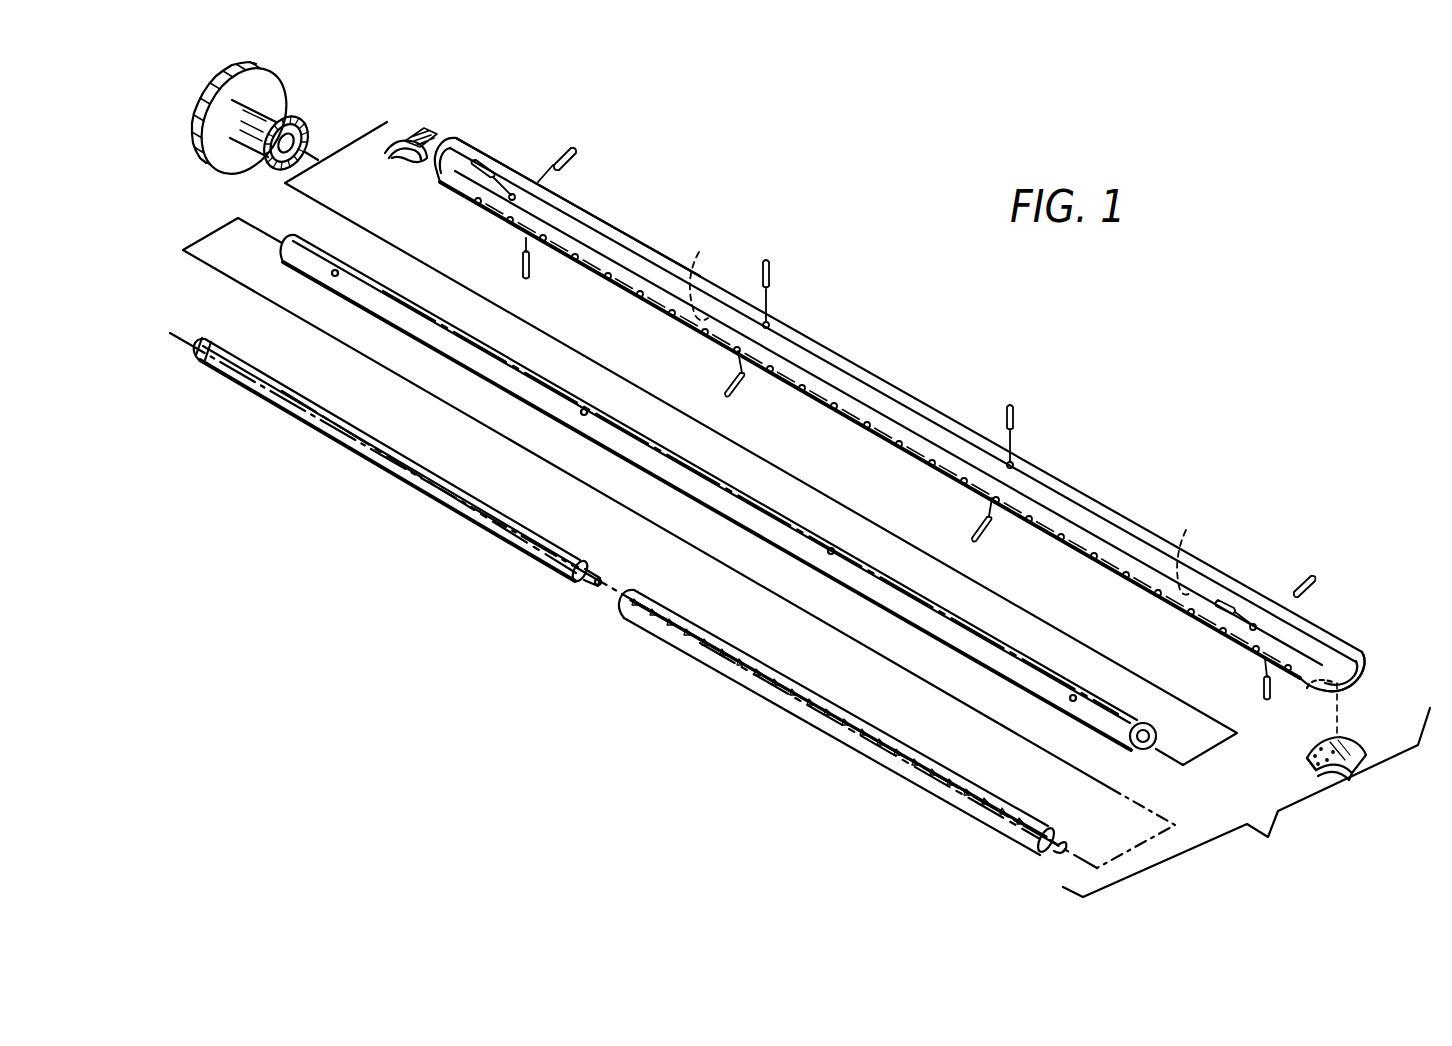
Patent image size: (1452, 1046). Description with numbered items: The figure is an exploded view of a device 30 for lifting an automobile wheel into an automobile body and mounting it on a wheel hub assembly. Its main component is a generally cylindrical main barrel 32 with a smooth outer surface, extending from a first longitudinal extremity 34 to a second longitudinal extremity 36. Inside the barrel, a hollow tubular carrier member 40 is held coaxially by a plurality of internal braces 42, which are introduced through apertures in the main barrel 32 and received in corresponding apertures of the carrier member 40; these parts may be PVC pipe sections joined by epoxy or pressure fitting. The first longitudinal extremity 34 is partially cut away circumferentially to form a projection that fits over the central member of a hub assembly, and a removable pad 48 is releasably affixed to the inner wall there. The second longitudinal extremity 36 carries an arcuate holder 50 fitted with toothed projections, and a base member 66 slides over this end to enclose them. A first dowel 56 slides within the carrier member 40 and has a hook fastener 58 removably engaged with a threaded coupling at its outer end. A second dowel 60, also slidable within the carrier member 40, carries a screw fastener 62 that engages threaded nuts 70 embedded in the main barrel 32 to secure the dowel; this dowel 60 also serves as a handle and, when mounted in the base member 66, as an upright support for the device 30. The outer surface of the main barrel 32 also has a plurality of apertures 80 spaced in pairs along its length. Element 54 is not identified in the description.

The device 30 is at (914, 336).
The main barrel 32 is at (936, 408).
The first longitudinal extremity 34 is at (1386, 606).
The second longitudinal extremity 36 is at (470, 109).
The hollow tubular carrier member 40 is at (688, 495).
The internal braces 42 is at (567, 165).
The removable pad 48 is at (1352, 742).
The arcuate holder 50 is at (423, 160).
The clip tab 54 is at (392, 148).
The first dowel 56 is at (788, 680).
The hook fastener 58 is at (1080, 812).
The second dowel 60 is at (309, 427).
The screw fastener 62 is at (594, 584).
The base member 66 is at (258, 66).
The threaded nuts 70 is at (952, 416).
The apertures 80 is at (544, 241).